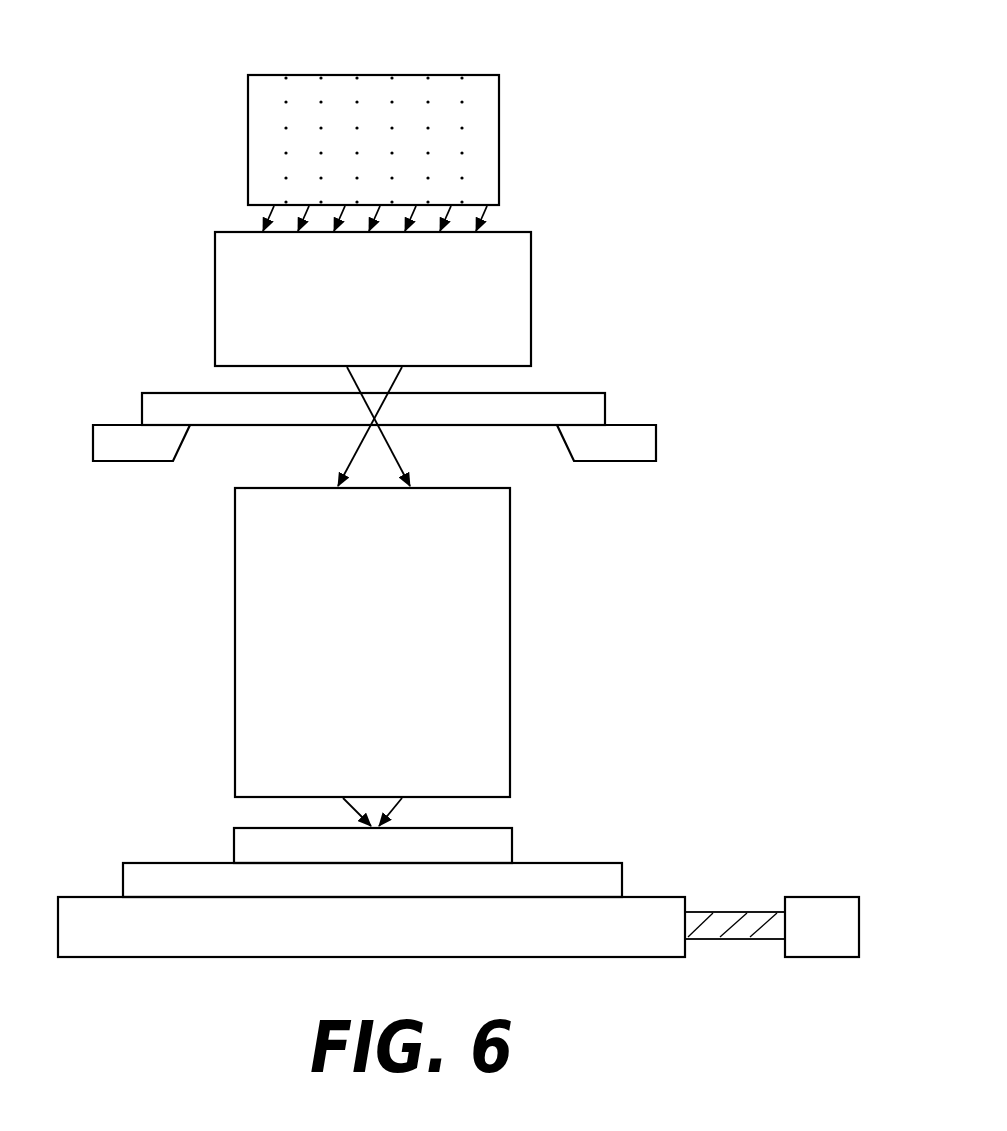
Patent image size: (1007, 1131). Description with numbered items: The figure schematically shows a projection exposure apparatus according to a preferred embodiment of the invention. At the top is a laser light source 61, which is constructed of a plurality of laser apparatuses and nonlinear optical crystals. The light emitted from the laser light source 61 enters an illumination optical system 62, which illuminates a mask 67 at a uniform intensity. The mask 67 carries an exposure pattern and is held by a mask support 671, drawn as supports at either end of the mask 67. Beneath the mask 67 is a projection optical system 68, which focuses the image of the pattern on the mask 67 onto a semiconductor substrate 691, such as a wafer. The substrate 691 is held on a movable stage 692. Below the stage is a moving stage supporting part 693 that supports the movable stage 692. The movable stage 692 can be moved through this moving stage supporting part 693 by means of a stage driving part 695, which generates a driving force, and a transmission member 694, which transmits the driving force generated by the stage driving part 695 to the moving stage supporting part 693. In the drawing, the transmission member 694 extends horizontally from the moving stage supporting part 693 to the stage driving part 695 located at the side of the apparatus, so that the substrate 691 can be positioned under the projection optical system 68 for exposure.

The laser light source 61 is at (410, 88).
The illumination optical system 62 is at (523, 273).
The mask 67 is at (583, 405).
The mask support 671 is at (635, 445).
The projection optical system 68 is at (502, 620).
The semiconductor substrate 691 is at (500, 842).
The movable stage 692 is at (610, 877).
The moving stage supporting part 693 is at (107, 943).
The transmission member 694 is at (730, 908).
The stage driving part 695 is at (825, 905).